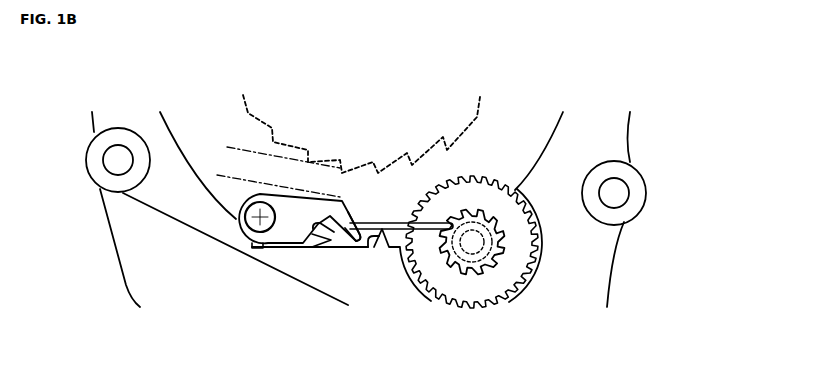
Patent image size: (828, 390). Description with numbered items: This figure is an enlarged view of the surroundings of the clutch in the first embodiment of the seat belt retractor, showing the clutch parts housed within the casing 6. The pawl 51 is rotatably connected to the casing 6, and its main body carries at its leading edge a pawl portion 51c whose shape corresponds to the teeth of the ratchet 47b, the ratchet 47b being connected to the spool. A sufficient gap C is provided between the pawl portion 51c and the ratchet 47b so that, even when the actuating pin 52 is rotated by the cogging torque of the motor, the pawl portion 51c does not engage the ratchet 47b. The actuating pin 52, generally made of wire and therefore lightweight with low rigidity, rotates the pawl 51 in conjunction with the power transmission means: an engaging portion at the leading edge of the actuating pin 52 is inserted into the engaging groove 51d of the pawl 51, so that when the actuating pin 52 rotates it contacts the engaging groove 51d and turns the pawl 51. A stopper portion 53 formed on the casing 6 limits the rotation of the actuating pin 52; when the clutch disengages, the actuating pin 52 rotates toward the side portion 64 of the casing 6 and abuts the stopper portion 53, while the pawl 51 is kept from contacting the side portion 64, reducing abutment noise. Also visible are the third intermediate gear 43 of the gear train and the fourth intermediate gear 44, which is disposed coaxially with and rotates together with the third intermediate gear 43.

The casing 6 is at (613, 140).
The ratchet 47b is at (342, 168).
The gap C is at (238, 151).
The pawl 51 is at (258, 248).
The pawl portion 51c is at (343, 201).
The engaging groove 51d is at (317, 233).
The side portion 64 is at (360, 232).
The stopper portion 53 is at (367, 243).
The actuating pin 52 is at (391, 242).
The third intermediate gear 43 is at (472, 309).
The fourth intermediate gear 44 is at (497, 279).